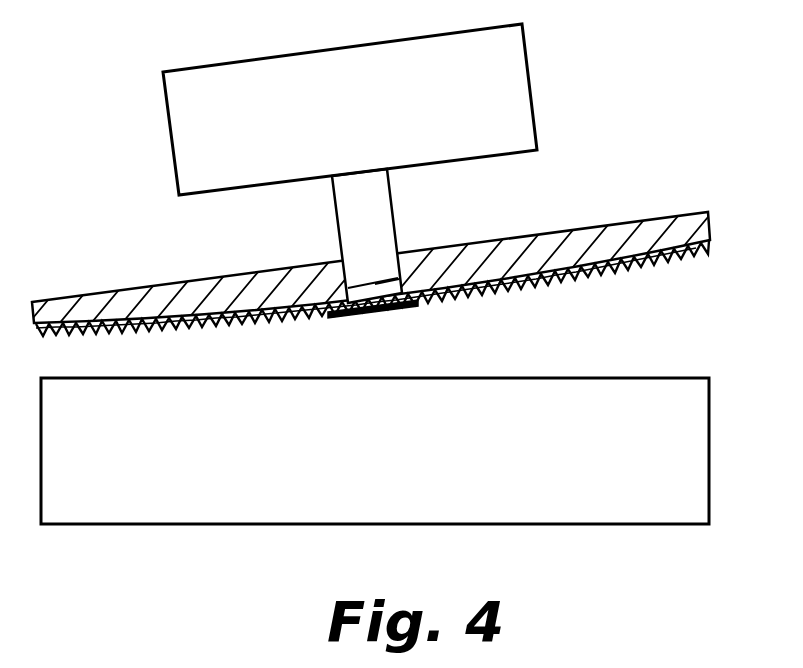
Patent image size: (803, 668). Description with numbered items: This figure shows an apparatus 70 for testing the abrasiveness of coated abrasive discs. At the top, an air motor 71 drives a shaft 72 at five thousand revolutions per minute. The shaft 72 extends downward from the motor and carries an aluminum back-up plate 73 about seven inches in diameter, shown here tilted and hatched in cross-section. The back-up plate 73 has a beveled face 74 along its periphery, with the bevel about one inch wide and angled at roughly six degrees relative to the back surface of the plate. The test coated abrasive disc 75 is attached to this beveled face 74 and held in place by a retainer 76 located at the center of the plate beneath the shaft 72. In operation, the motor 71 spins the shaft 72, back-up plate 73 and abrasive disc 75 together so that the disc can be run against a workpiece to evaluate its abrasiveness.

The apparatus 70 is at (605, 170).
The air motor 71 is at (522, 84).
The shaft 72 is at (348, 213).
The back-up plate 73 is at (698, 228).
The beveled face 74 is at (677, 260).
The test coated abrasive disc 75 is at (597, 280).
The retainer 76 is at (417, 305).